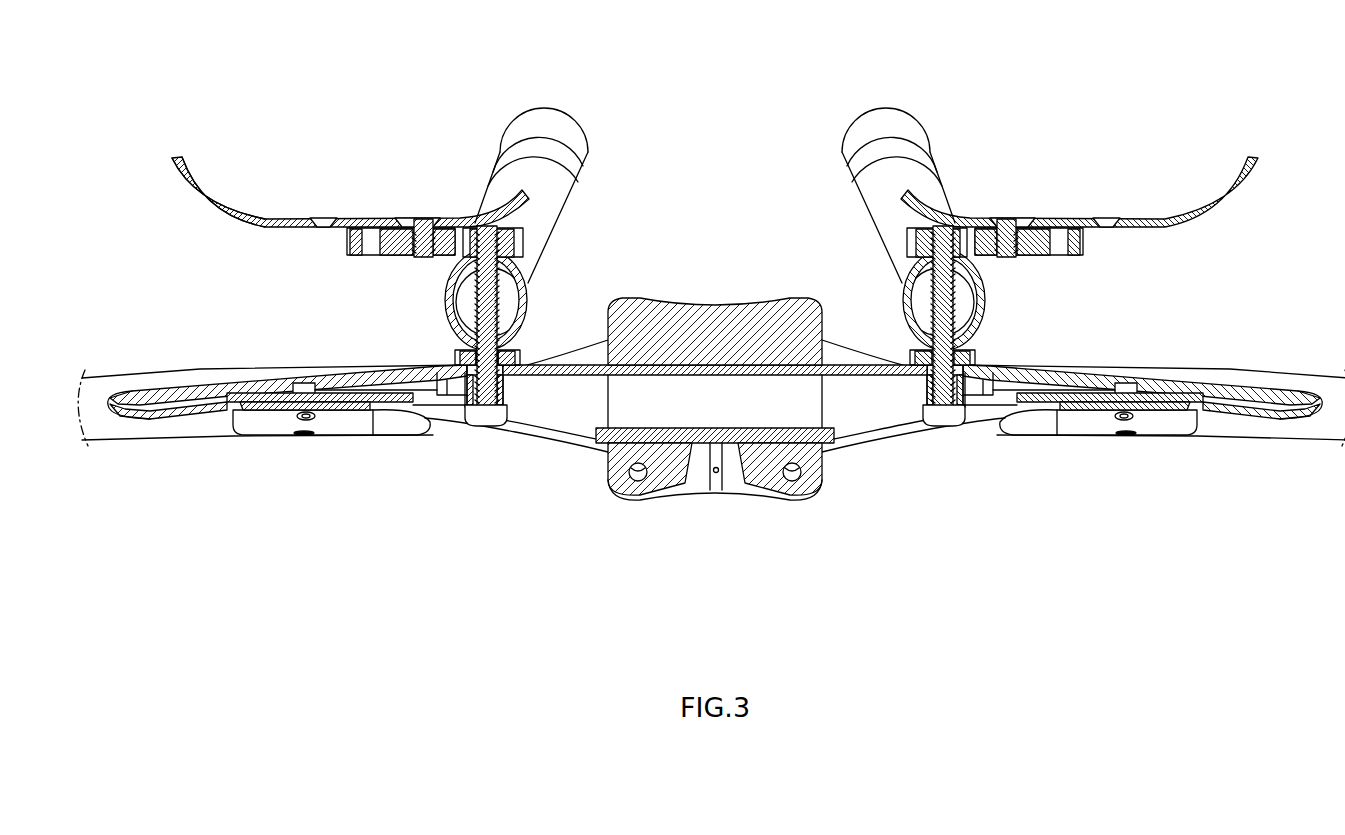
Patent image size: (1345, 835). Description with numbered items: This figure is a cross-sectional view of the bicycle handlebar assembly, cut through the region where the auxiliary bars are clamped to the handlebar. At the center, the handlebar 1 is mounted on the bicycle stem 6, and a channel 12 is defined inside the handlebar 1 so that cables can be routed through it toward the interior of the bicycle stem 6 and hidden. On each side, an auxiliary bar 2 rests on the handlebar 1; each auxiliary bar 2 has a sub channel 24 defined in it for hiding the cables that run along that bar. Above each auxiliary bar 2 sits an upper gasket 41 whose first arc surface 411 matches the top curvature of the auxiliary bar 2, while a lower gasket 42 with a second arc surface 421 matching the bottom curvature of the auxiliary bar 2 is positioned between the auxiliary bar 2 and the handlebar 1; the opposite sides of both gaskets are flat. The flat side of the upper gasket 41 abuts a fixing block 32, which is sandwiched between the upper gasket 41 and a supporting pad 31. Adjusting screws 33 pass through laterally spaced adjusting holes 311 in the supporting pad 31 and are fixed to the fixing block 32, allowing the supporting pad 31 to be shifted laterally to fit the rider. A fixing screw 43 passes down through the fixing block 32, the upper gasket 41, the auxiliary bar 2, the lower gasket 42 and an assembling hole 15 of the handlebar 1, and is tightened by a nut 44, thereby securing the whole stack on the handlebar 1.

The handlebar 1 is at (456, 425).
The channel 12 is at (553, 405).
The assembling hole 15 is at (940, 418).
The auxiliary bar 2 is at (550, 125).
The sub channel 24 is at (460, 314).
The supporting pad 31 is at (230, 207).
The adjusting hole 311 is at (294, 219).
The fixing block 32 is at (395, 253).
The adjusting screw 33 is at (412, 222).
The upper gasket 41 is at (523, 247).
The first arc surface 411 is at (470, 270).
The lower gasket 42 is at (540, 352).
The second arc surface 421 is at (505, 358).
The fixing screw 43 is at (468, 223).
The nut 44 is at (970, 412).
The bicycle stem 6 is at (733, 323).